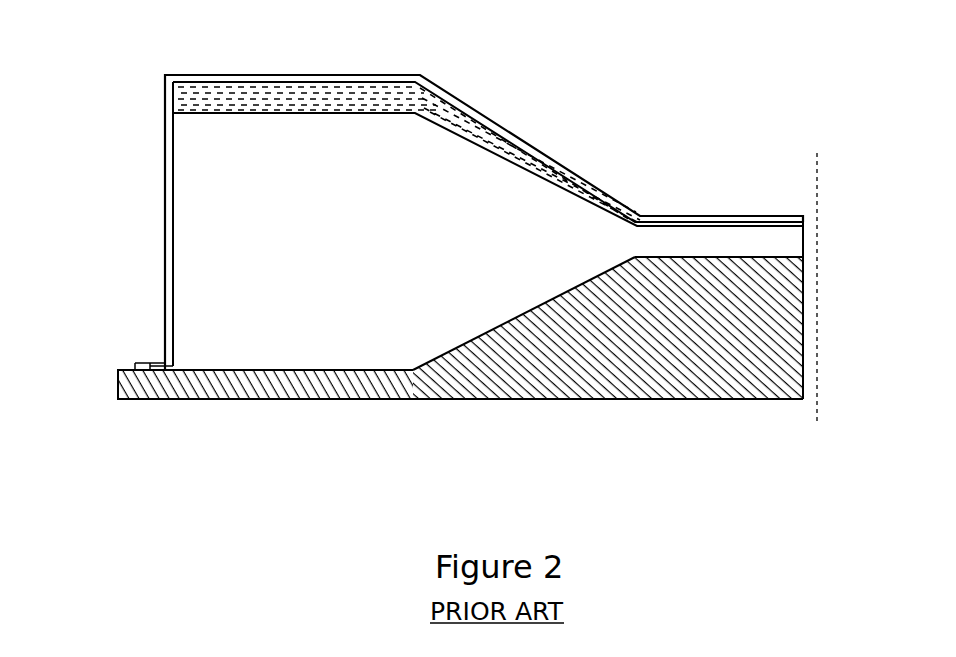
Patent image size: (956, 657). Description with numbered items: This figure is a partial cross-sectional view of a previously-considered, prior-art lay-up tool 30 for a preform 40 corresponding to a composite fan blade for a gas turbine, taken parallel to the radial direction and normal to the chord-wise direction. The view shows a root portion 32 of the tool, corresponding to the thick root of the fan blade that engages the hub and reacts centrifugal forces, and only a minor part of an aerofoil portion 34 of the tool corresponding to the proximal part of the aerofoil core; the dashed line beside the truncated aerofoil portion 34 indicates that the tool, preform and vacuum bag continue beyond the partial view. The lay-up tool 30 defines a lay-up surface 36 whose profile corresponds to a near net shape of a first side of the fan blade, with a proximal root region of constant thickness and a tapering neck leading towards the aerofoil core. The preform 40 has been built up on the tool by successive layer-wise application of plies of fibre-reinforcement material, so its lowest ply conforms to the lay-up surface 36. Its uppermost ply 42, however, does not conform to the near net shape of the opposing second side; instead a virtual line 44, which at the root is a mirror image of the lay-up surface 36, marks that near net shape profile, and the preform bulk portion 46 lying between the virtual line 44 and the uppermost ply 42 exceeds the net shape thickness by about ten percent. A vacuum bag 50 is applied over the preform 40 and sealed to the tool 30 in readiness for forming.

The lay-up tool 30 is at (232, 380).
The root portion 32 is at (283, 392).
The aerofoil portion 34 is at (690, 360).
The lay-up surface 36 is at (485, 333).
The preform 40 is at (215, 272).
The uppermost ply 42 is at (383, 86).
The virtual line 44 is at (230, 117).
The preform bulk portion 46 is at (203, 94).
The vacuum bag 50 is at (568, 170).